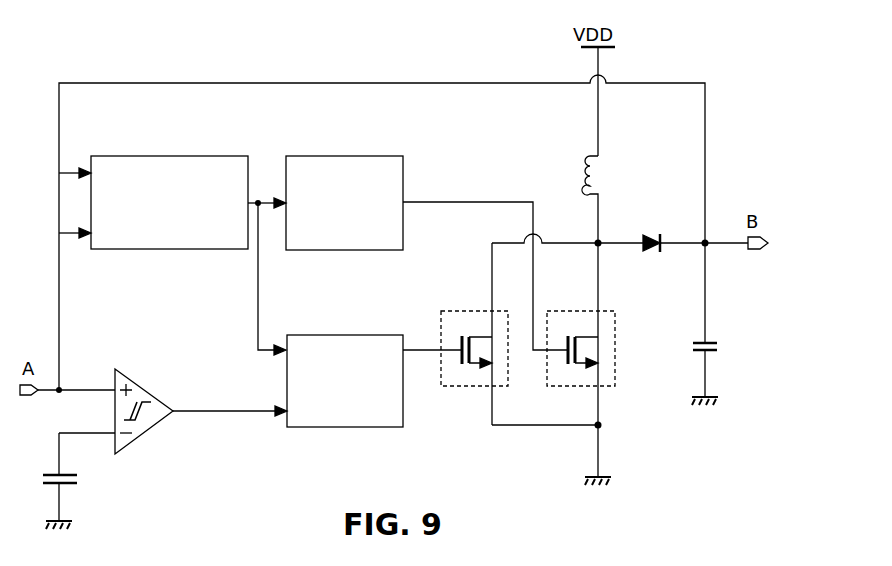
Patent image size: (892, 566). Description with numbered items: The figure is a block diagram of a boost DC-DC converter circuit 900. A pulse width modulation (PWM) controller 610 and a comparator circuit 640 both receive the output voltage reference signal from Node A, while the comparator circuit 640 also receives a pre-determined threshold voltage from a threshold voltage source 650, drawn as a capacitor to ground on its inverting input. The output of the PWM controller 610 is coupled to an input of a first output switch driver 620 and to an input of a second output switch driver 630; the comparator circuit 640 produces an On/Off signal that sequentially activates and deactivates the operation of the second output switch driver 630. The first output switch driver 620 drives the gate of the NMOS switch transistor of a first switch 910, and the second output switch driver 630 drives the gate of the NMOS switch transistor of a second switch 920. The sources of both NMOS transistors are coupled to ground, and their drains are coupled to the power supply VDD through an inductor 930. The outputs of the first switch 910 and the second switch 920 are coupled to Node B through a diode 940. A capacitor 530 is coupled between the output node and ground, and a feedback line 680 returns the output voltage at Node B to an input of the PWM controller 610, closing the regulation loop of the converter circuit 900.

The capacitor 530 is at (698, 341).
The pulse width modulation (PWM) controller 610 is at (171, 156).
The first output switch driver 620 is at (337, 156).
The second output switch driver 630 is at (338, 335).
The comparator circuit 640 is at (146, 391).
The threshold voltage source 650 is at (72, 484).
The feedback line 680 is at (705, 145).
The boost DC-DC converter circuit 900 is at (705, 19).
The first switch 910 is at (583, 311).
The second switch 920 is at (476, 311).
The inductor 930 is at (585, 155).
The diode 940 is at (649, 236).